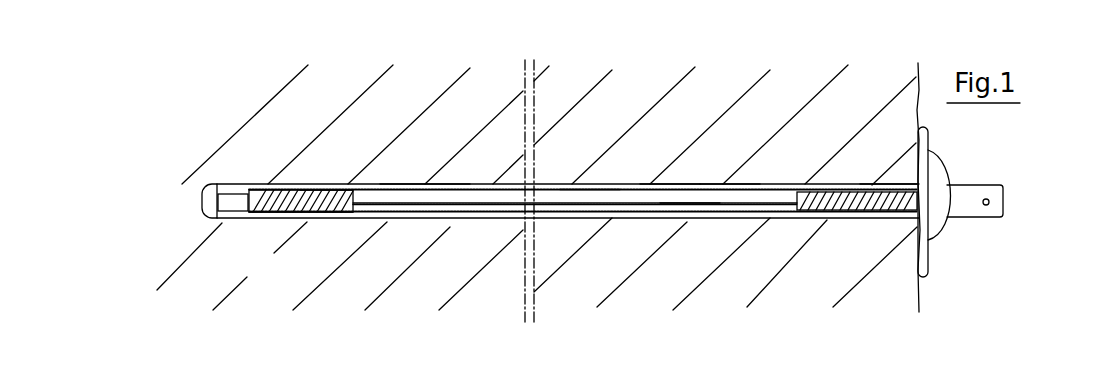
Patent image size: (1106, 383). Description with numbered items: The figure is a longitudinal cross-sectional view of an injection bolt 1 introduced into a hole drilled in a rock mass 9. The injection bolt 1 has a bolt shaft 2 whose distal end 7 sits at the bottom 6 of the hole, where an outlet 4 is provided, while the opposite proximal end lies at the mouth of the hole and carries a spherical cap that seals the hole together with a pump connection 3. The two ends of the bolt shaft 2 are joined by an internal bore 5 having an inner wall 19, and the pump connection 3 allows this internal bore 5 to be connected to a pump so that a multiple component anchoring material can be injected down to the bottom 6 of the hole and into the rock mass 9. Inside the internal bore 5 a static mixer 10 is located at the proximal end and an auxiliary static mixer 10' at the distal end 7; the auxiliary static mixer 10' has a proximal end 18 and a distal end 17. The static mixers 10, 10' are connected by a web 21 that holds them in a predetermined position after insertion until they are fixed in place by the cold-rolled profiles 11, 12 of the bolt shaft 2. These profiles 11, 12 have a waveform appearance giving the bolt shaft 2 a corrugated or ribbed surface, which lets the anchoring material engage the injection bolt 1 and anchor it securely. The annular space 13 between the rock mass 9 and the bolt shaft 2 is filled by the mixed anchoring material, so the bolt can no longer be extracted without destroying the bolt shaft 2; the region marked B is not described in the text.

The injection bolt 1 is at (392, 269).
The bolt shaft 2 is at (613, 213).
The pump connection 3 is at (986, 220).
The outlet 4 is at (230, 215).
The internal bore 5 is at (447, 204).
The bottom of the hole 6 is at (213, 193).
The distal end 7 is at (255, 193).
The rock mass 9 is at (640, 109).
The static mixer 10 is at (857, 233).
The auxiliary static mixer 10' is at (321, 243).
The profile 11 is at (663, 187).
The profile 12 is at (723, 184).
The annular space 13 is at (413, 187).
The distal end of auxiliary static mixer 17 is at (263, 213).
The proximal end of auxiliary static mixer 18 is at (348, 193).
The inner wall 19 is at (590, 197).
The web 21 is at (688, 205).
The bore hole B is at (890, 188).